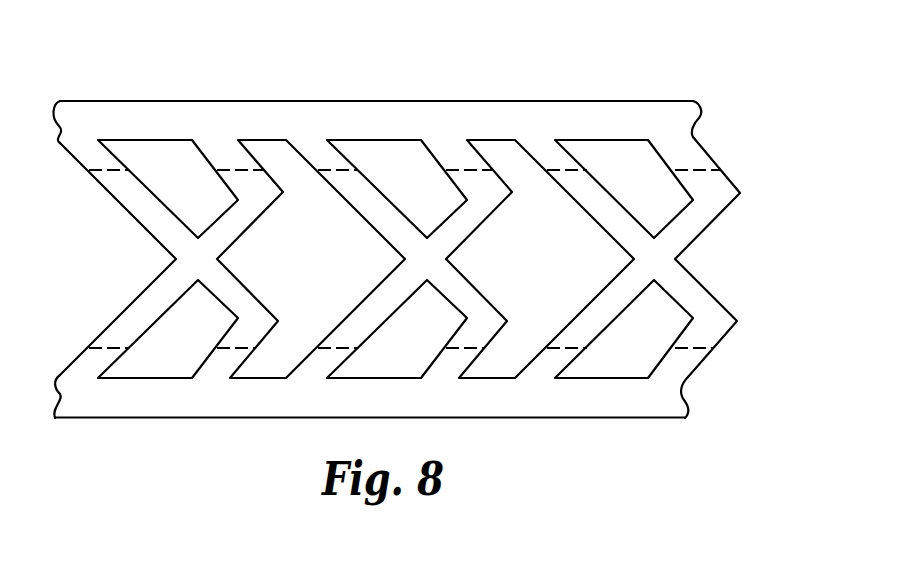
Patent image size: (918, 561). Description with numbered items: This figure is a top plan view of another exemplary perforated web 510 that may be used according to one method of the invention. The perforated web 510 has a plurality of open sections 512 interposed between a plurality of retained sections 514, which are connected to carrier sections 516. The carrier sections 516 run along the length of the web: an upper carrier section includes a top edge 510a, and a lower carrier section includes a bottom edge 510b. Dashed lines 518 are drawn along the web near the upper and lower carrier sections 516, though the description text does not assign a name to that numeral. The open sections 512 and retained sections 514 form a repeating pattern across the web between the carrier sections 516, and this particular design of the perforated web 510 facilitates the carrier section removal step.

The perforated web 510 is at (429, 250).
The top edge 510a is at (322, 100).
The bottom edge 510b is at (483, 417).
The open sections 512 is at (507, 157).
The retained sections 514 is at (612, 300).
The carrier sections 516 is at (207, 113).
The fold lines 518 is at (225, 350).